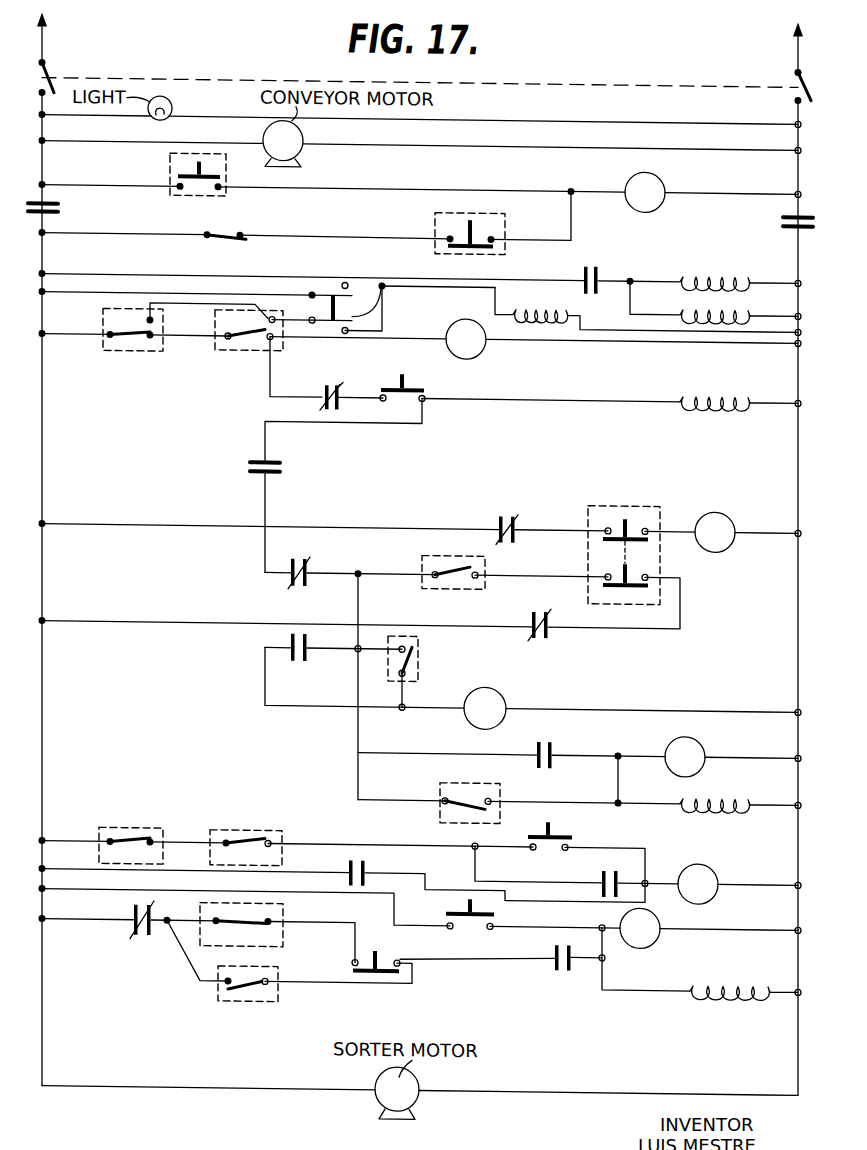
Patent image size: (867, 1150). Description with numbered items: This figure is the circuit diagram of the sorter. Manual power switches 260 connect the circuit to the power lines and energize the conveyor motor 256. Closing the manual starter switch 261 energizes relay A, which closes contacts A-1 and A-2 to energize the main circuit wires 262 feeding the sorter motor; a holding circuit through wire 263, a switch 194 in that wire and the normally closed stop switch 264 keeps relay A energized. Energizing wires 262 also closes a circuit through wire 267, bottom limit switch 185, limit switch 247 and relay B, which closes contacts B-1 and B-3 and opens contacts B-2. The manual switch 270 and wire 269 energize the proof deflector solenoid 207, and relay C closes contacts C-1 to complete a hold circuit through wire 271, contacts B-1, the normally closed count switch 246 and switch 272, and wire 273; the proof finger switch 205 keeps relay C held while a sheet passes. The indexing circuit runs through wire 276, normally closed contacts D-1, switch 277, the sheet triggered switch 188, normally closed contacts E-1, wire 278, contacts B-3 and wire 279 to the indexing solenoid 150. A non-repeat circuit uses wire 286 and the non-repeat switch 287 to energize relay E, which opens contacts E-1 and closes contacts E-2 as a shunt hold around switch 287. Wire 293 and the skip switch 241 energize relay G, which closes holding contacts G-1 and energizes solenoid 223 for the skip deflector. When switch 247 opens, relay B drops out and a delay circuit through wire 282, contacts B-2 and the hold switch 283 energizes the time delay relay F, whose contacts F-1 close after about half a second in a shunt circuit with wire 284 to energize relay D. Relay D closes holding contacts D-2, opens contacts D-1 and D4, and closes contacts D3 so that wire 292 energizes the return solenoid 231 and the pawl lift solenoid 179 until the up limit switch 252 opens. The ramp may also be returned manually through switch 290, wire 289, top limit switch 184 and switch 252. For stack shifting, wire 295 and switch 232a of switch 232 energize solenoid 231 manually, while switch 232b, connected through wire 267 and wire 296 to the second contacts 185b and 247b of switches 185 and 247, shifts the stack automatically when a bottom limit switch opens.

The manual power switches 260 is at (48, 72).
The conveyor motor 256 is at (298, 131).
The manual starter switch 261 is at (216, 190).
The contacts A1 A-1 is at (60, 206).
The wire 263 is at (121, 231).
The switch 194 is at (230, 238).
The conductor 292 is at (97, 272).
The wire 295 is at (157, 290).
The switch 232a is at (322, 290).
The switch 232 is at (365, 279).
The relay A is at (659, 175).
The normally closed stop switch 264 is at (485, 234).
The contacts A2 A-2 is at (782, 213).
The contacts D3 is at (597, 260).
The solenoid 231 is at (702, 267).
The main circuit wires 262 is at (46, 378).
The pawl lift solenoid 179 is at (714, 303).
The wire 267 is at (84, 318).
The bottom limit switch 185 is at (133, 338).
The wire 296 is at (197, 326).
The switch contact 185b is at (175, 340).
The limit switch 247 is at (246, 346).
The contacts 247b is at (273, 321).
The switch 232b is at (345, 331).
The relay B is at (461, 317).
The contacts D4 is at (345, 402).
The wire 279 is at (546, 396).
The indexing solenoid 150 is at (724, 400).
The contacts B3 B-3 is at (282, 464).
The wire 282 is at (85, 522).
The conductor 278 is at (263, 543).
The contacts E1 E-1 is at (307, 556).
The contacts B2 B-2 is at (498, 514).
The hold switch 283 is at (605, 532).
The relay F is at (717, 512).
The switch 277 is at (637, 580).
The wire 286 is at (360, 580).
The sheet triggered switch 188 is at (456, 578).
The contacts D1 D-1 is at (548, 622).
The wire 276 is at (96, 621).
The contacts E2 E-2 is at (290, 637).
The non-repeat switch 287 is at (418, 652).
The relay E is at (503, 683).
The contacts G1 G-1 is at (553, 741).
The relay G is at (671, 738).
The solenoid 223 is at (720, 790).
The wire 293 is at (356, 771).
The skip switch 241 is at (440, 807).
The wire 289 is at (76, 839).
The top limit switch 184 is at (138, 836).
The disk controlled limit switch 252 is at (246, 836).
The switch 290 is at (560, 830).
The wire 284 is at (337, 866).
The contacts F1 F-1 is at (368, 864).
The contacts D2 D-2 is at (605, 868).
The relay D is at (708, 862).
The wire 269 is at (102, 889).
The count switch 246 is at (270, 917).
The manual switch 270 is at (493, 908).
The relay C is at (659, 922).
The wire 271 is at (96, 923).
The contacts B1 B-1 is at (136, 934).
The proof finger switch 205 is at (262, 975).
The switch 272 is at (400, 968).
The wire 273 is at (490, 956).
The contacts C1 C-1 is at (557, 944).
The proof deflector solenoid 207 is at (722, 973).